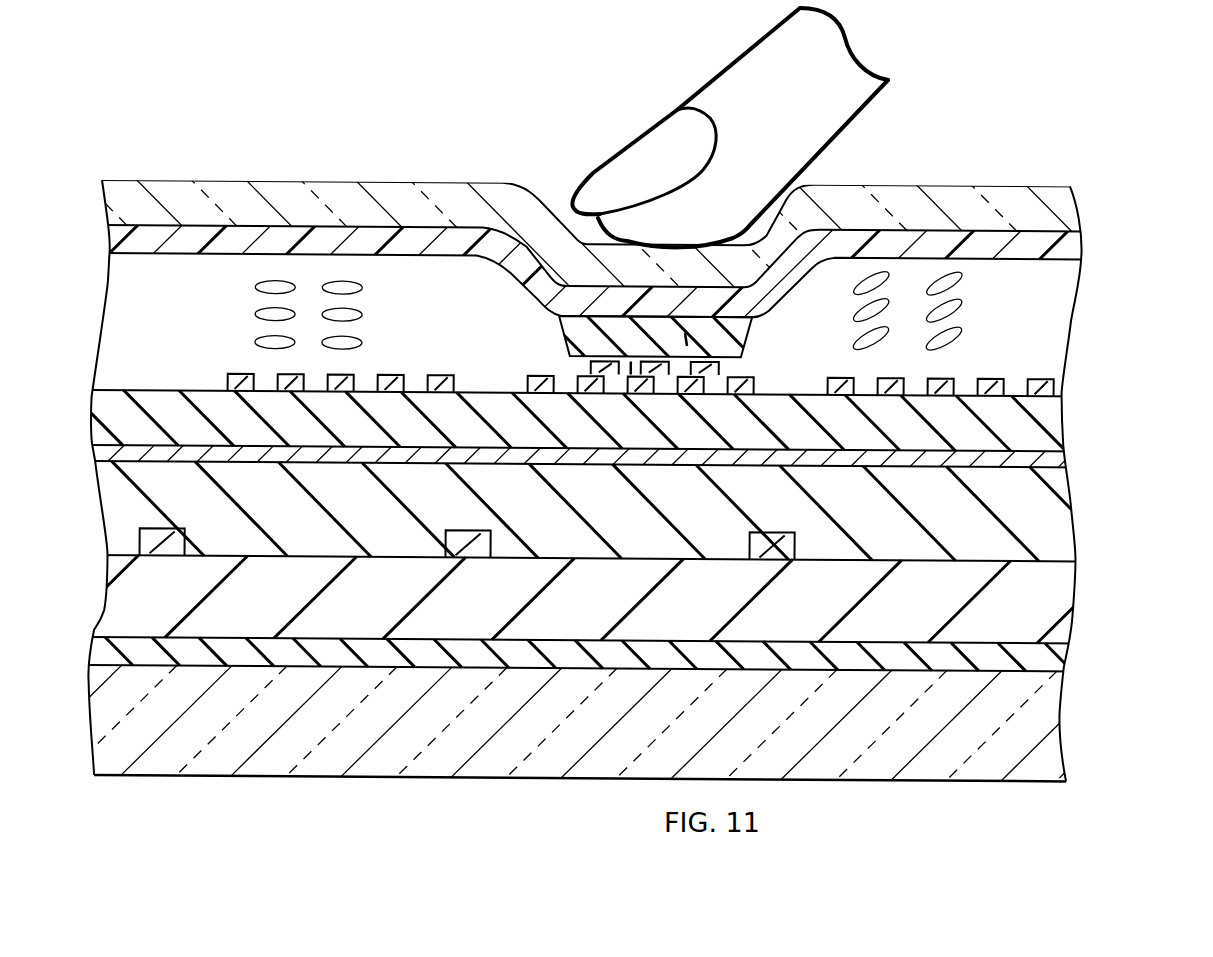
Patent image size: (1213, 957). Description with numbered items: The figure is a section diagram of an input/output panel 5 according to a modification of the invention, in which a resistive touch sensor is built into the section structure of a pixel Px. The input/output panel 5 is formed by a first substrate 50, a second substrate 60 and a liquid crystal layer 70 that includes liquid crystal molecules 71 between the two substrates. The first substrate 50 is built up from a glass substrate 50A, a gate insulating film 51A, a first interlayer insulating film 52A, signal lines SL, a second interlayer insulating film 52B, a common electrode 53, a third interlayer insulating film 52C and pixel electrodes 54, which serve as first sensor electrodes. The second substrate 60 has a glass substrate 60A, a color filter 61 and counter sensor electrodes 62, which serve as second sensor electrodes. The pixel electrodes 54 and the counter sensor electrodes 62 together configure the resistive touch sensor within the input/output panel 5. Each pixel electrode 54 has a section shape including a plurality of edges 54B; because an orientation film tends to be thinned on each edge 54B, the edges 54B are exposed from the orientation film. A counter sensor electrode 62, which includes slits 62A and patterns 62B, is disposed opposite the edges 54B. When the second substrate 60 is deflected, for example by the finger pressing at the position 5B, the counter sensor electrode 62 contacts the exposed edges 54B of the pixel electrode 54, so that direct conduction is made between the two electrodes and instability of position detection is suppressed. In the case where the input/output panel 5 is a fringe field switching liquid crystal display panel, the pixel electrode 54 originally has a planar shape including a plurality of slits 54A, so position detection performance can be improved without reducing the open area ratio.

The input/output panel 5 is at (1014, 90).
The pressed detection portion 5B is at (685, 343).
The pixel Px is at (261, 165).
The liquid crystal molecules 71 is at (339, 283).
The slits 54A is at (565, 382).
The edges 54B is at (764, 377).
The counter sensor electrode 62 is at (639, 223).
The patterns 62B is at (597, 360).
The slits 62A is at (653, 360).
The glass substrate 60A is at (1063, 218).
The color filter 61 is at (1072, 245).
The second substrate 60 is at (619, 252).
The liquid crystal layer 70 is at (606, 257).
The pixel electrodes 54 is at (681, 260).
The third interlayer insulating film 52C is at (1050, 423).
The common electrode 53 is at (1050, 458).
The second interlayer insulating film 52B is at (1057, 503).
The first substrate 50 is at (603, 450).
The first insulating layer 52A is at (1060, 593).
The gate insulating film 51A is at (1060, 655).
The glass substrate 50A is at (589, 723).
The signal lines SL is at (157, 543).